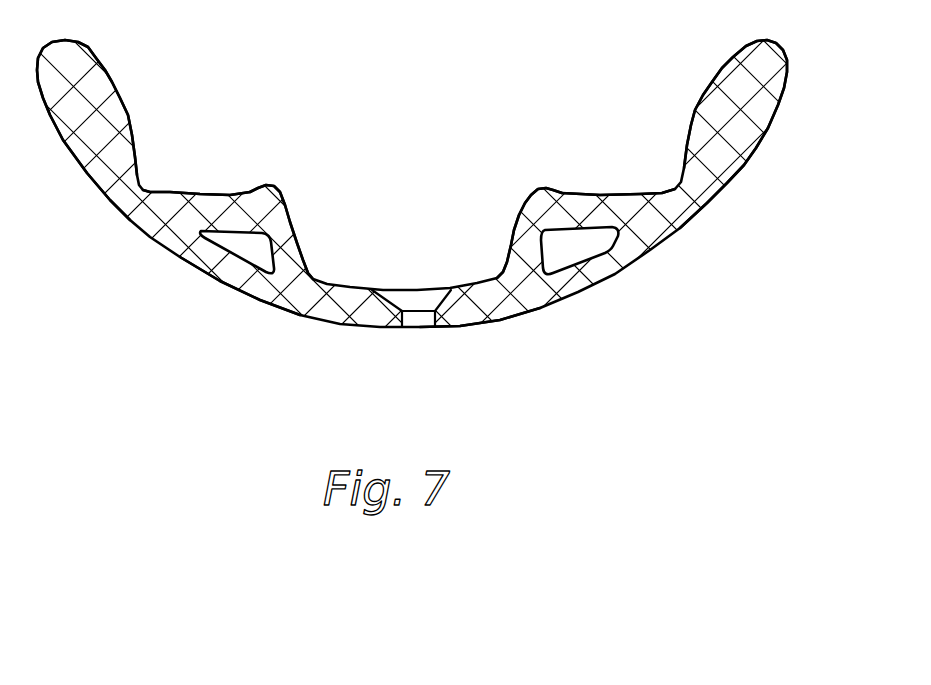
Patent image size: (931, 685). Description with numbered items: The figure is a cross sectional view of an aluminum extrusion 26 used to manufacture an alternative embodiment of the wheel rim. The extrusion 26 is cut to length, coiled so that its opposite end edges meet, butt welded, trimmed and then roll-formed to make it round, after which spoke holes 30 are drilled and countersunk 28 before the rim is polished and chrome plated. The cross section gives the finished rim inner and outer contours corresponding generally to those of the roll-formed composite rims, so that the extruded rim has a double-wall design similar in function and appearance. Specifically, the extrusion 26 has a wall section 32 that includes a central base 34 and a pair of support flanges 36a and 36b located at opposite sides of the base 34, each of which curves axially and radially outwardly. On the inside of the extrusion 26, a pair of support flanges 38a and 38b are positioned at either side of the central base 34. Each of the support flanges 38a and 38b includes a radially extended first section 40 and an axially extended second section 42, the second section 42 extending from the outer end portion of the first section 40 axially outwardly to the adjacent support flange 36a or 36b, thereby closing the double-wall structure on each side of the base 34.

The extrusion 26 is at (350, 343).
The countersink 28 is at (392, 300).
The spoke hole 30 is at (421, 323).
The wall section 32 is at (247, 300).
The central base 34 is at (461, 322).
The support flange 36a is at (140, 220).
The support flange 36b is at (692, 196).
The support flange 38a is at (273, 190).
The support flange 38b is at (538, 191).
The first section 40 is at (292, 227).
The second section 42 is at (202, 203).